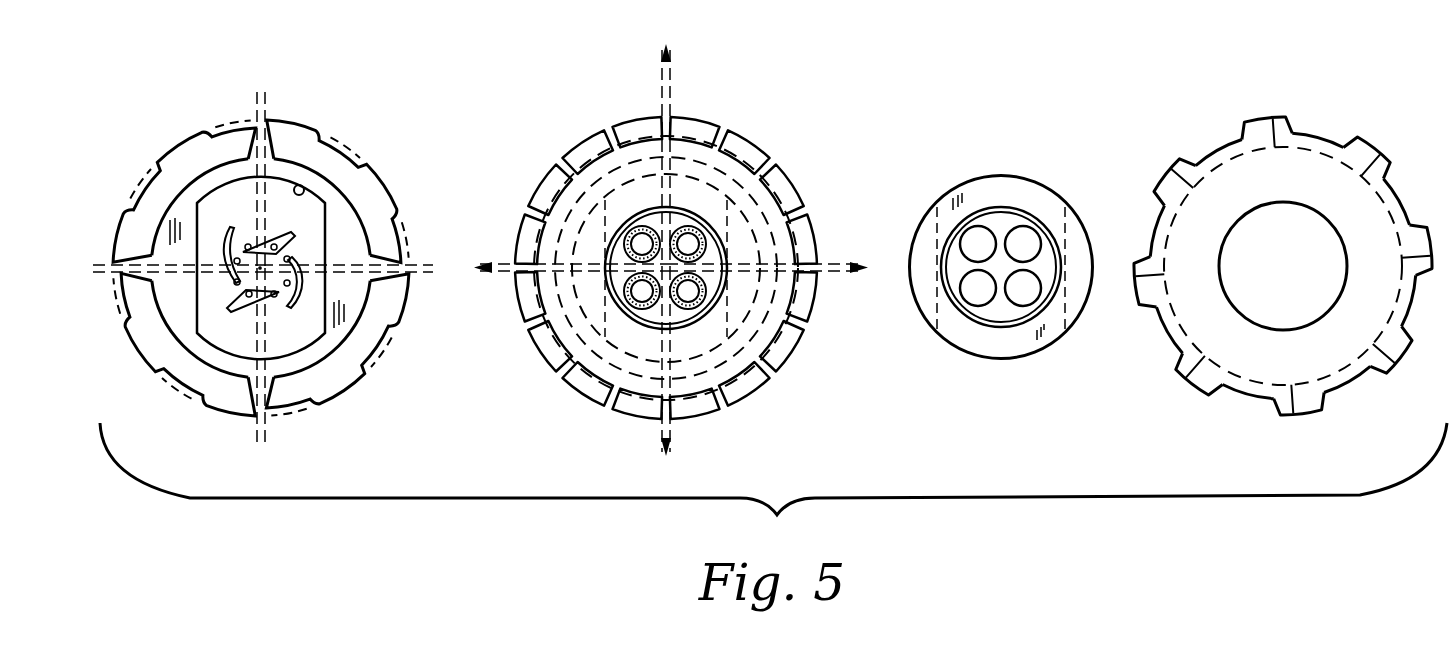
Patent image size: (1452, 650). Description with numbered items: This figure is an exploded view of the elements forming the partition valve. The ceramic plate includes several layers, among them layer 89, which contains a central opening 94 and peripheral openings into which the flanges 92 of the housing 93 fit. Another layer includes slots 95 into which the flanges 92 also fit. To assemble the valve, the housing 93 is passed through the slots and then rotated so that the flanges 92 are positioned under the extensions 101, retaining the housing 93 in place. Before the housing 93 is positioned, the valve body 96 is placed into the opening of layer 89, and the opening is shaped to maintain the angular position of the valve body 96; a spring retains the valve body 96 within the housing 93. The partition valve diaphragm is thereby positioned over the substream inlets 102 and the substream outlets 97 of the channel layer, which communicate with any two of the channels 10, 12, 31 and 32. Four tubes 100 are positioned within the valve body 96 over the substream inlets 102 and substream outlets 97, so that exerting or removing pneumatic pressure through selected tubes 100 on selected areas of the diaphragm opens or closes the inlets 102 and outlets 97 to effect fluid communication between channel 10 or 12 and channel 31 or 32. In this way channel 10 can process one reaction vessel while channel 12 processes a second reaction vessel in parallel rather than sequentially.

The channel 10 is at (265, 441).
The channel 12 is at (270, 97).
The channel 31 is at (90, 272).
The channel 32 is at (418, 271).
The layer 89 is at (352, 222).
The flanges 92 is at (1262, 120).
The housing 93 is at (1235, 185).
The central opening 94 is at (298, 180).
The slots 95 is at (294, 122).
The valve body 96 is at (1023, 180).
The substream outlets 97 is at (231, 228).
The tubes 100 is at (690, 226).
The extensions 101 is at (232, 122).
The substream inlets 102 is at (292, 233).